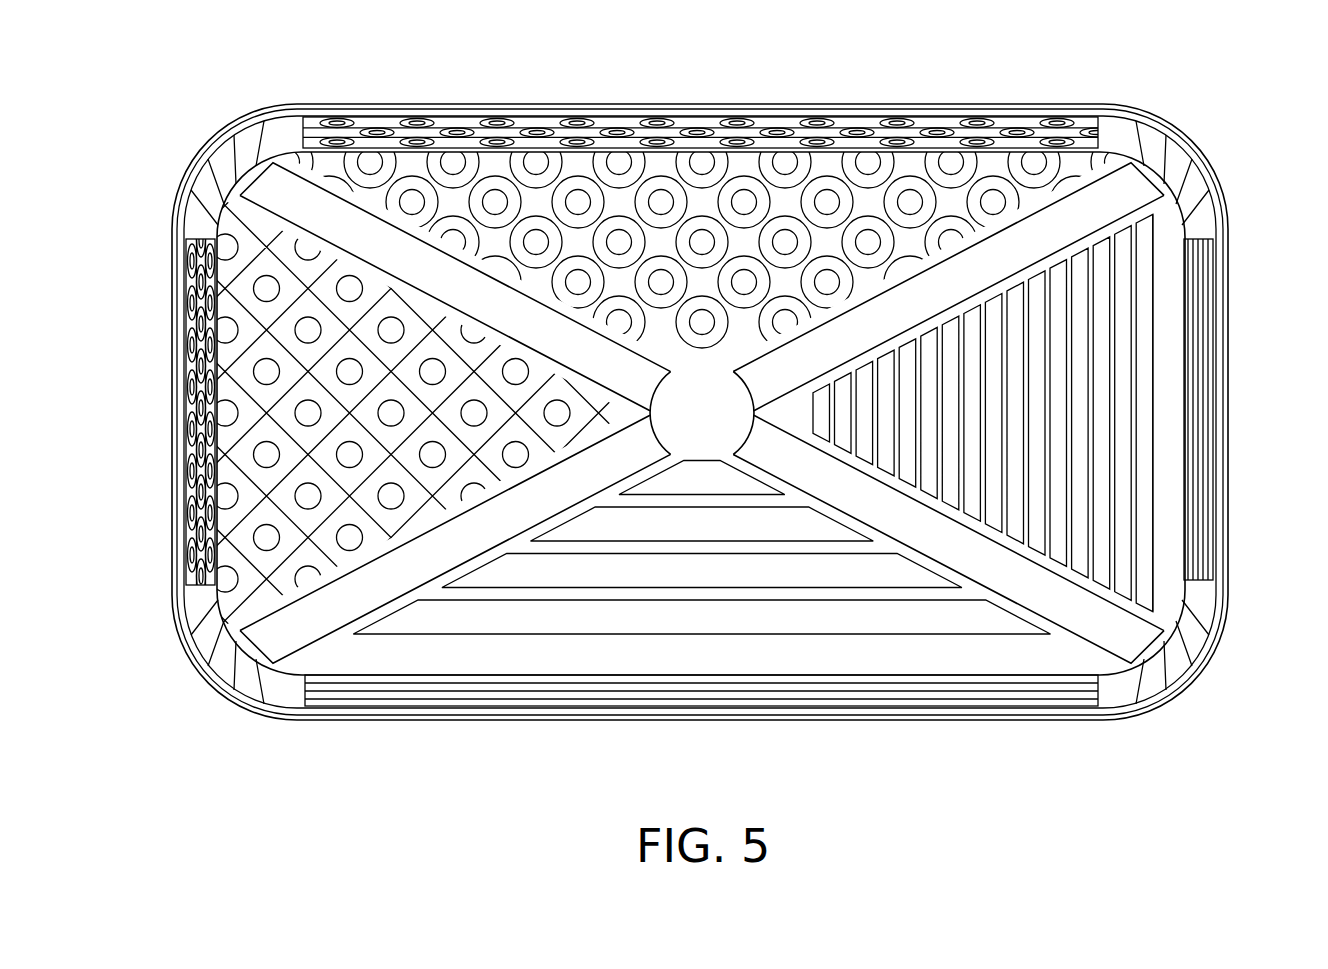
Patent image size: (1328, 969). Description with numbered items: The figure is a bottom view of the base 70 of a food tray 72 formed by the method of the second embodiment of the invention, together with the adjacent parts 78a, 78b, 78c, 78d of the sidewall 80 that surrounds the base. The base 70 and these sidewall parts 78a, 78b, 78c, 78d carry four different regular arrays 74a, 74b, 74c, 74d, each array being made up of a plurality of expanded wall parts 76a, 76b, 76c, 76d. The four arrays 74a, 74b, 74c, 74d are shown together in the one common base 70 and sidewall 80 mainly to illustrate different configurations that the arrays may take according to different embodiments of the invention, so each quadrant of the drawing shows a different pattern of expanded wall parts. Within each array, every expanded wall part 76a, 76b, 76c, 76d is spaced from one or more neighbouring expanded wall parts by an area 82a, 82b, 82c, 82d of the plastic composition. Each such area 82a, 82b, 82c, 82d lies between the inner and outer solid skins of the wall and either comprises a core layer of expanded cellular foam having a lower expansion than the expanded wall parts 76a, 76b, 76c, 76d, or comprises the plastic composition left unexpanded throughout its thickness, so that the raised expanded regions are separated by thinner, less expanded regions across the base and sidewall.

The base 70 is at (1163, 383).
The food tray 72 is at (1181, 108).
The regular array 74a is at (742, 181).
The regular array 74b is at (1122, 287).
The regular array 74c is at (505, 617).
The regular array 74d is at (303, 300).
The expanded wall parts 76a is at (990, 182).
The expanded wall parts 76b is at (1143, 525).
The expanded wall parts 76c is at (982, 622).
The expanded wall parts 76d is at (245, 540).
The sidewall part 78a is at (828, 150).
The sidewall part 78b is at (1202, 323).
The sidewall part 78c is at (576, 700).
The sidewall part 78d is at (200, 328).
The sidewall 80 is at (356, 104).
The area of the plastic composition 82a is at (500, 166).
The area of the plastic composition 82b is at (1163, 472).
The area of the plastic composition 82c is at (905, 592).
The area of the plastic composition 82d is at (262, 393).